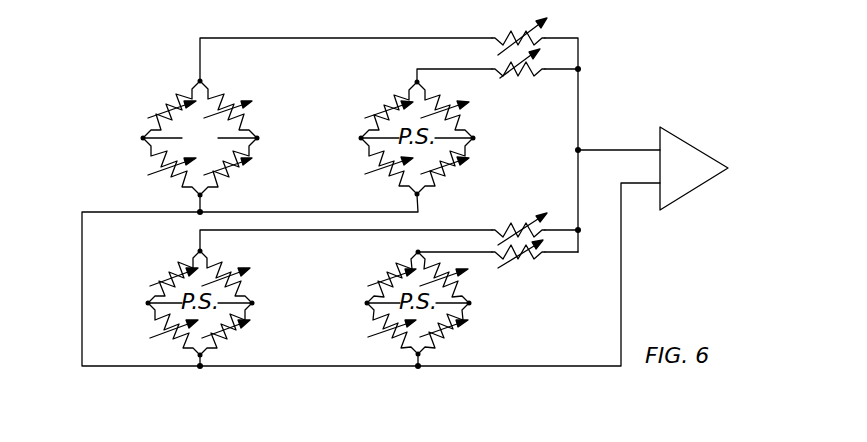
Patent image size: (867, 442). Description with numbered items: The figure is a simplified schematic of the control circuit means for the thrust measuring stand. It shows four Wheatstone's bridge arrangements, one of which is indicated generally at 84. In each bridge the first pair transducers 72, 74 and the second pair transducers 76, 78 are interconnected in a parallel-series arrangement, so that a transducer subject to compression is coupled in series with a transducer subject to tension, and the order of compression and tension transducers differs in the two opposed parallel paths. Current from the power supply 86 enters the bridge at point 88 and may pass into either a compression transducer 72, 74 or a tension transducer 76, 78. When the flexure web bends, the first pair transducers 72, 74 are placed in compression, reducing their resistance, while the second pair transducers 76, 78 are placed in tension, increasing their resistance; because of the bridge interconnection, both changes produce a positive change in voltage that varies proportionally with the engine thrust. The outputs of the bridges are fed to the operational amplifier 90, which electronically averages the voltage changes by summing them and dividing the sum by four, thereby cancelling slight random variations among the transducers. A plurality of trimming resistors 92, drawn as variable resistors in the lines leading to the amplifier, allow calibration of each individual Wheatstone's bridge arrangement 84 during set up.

The first pair transducer 72 is at (168, 104).
The first pair transducer 74 is at (230, 170).
The second pair transducer 76 is at (167, 170).
The second pair transducer 78 is at (227, 100).
The Wheatstone's bridge arrangement 84 is at (126, 122).
The power supply 86 is at (220, 131).
The point 88 is at (143, 138).
The operational amplifier 90 is at (702, 156).
The trimming resistors 92 is at (508, 64).